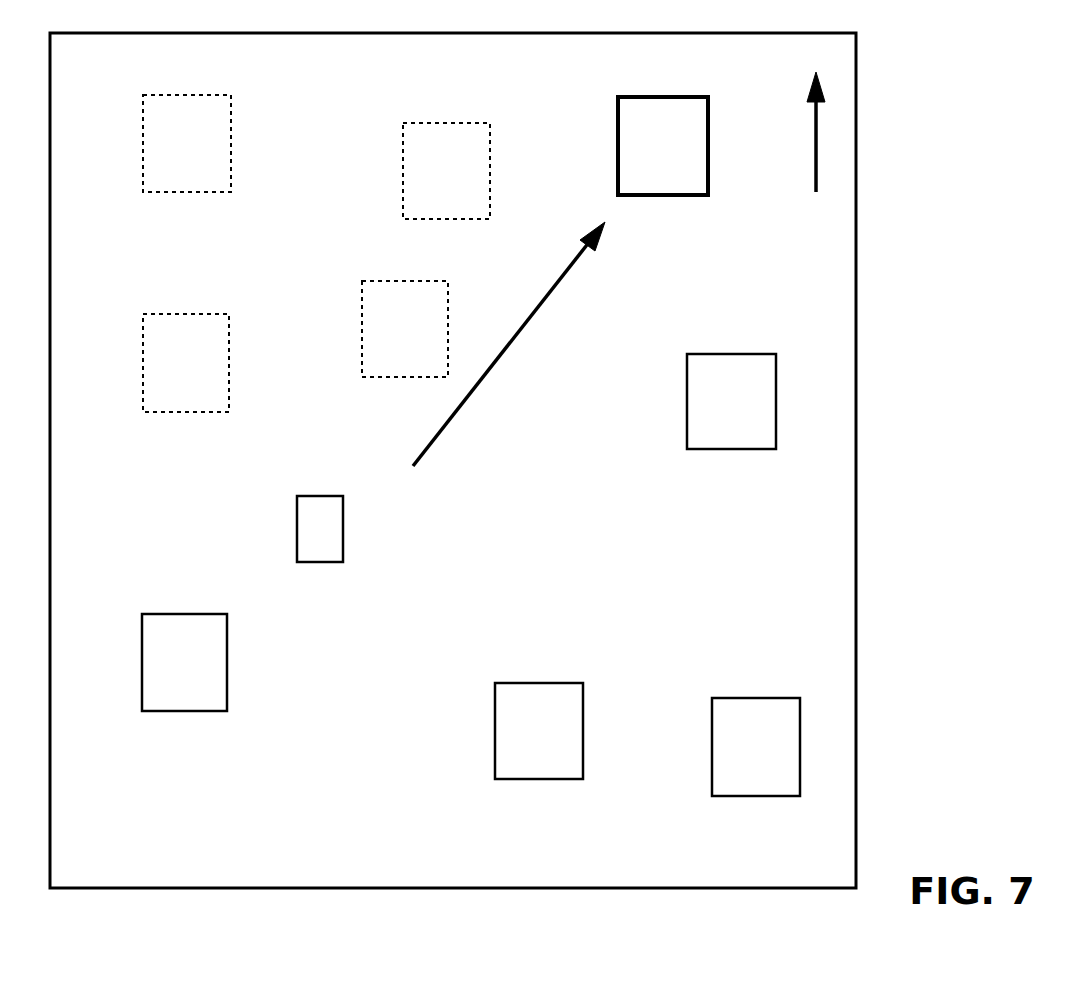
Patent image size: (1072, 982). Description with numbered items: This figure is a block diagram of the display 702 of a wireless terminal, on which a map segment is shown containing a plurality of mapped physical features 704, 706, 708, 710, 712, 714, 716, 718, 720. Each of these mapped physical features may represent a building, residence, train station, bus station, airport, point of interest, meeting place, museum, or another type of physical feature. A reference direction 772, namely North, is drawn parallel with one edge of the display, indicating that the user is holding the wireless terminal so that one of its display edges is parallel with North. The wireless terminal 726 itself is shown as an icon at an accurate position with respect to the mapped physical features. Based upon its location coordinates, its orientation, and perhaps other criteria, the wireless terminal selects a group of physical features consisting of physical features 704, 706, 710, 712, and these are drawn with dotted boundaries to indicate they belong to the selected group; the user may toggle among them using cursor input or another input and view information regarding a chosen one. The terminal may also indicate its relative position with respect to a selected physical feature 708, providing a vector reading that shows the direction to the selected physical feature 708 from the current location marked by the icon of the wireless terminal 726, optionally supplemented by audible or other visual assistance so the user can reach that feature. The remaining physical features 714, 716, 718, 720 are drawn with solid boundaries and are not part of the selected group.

The display 702 is at (770, 31).
The mapped physical feature 704 is at (169, 154).
The mapped physical feature 706 is at (427, 182).
The selected physical feature 708 is at (645, 157).
The mapped physical feature 710 is at (167, 375).
The mapped physical feature 712 is at (386, 341).
The mapped physical feature 714 is at (713, 412).
The mapped physical feature 716 is at (167, 674).
The mapped physical feature 718 is at (520, 742).
The mapped physical feature 720 is at (737, 759).
The wireless terminal 726 is at (327, 495).
The reference direction 772 is at (813, 182).